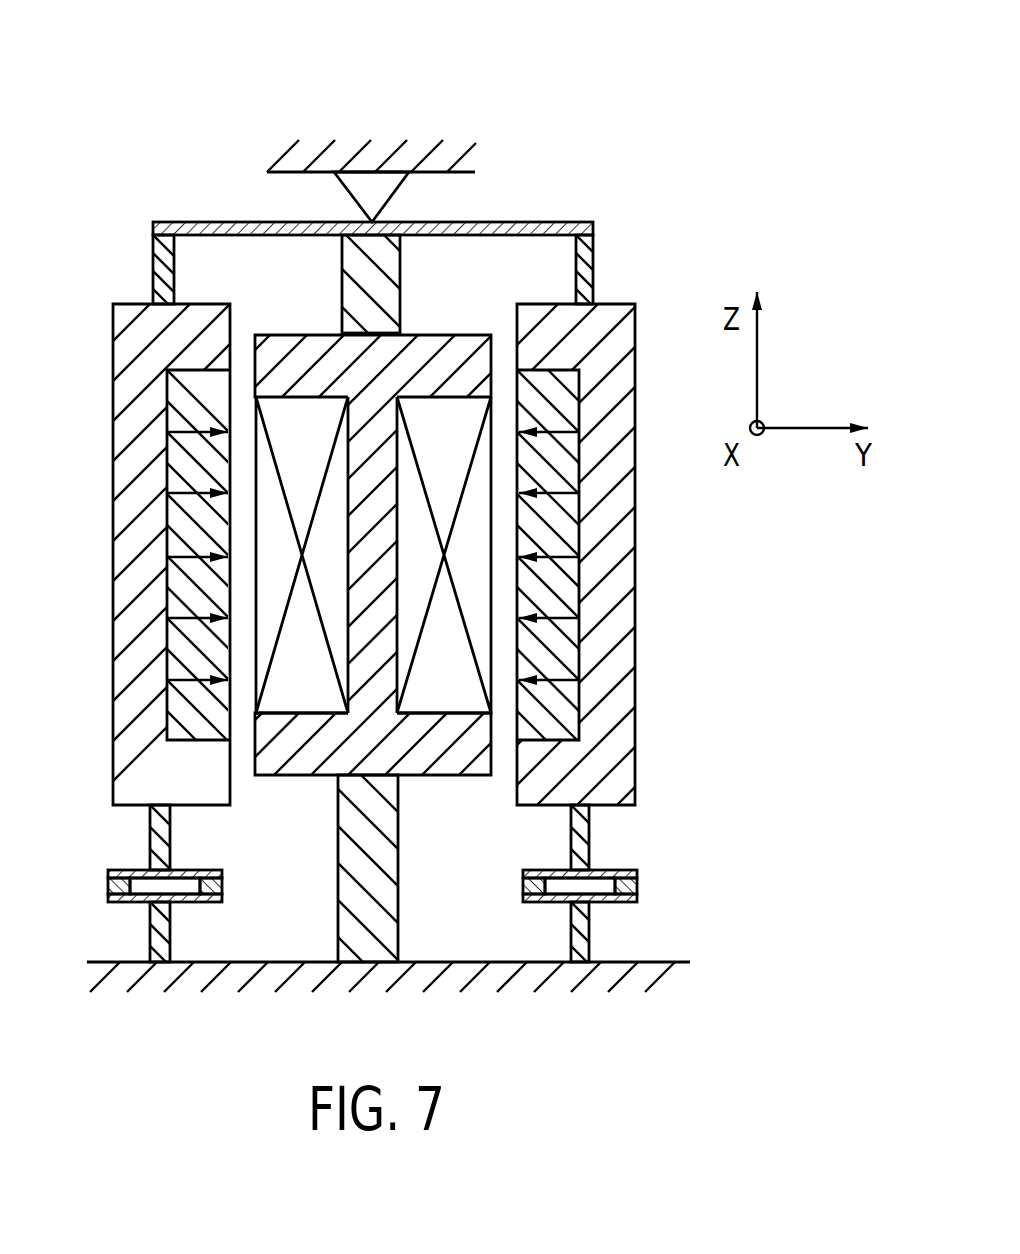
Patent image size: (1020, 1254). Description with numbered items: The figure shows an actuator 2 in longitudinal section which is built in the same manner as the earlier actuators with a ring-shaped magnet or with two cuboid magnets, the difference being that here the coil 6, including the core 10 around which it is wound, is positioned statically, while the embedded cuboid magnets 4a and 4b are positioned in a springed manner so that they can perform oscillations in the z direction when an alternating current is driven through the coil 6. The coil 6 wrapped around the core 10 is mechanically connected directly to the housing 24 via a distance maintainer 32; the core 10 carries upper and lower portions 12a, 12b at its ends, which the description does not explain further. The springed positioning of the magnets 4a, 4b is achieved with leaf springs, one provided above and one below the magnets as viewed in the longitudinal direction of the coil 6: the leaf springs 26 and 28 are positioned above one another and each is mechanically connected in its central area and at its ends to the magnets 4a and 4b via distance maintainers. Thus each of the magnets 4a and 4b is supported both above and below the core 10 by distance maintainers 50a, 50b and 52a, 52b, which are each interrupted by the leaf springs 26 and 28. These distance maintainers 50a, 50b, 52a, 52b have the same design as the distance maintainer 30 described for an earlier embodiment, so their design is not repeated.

The actuator 2 is at (682, 96).
The housing 24 is at (455, 150).
The leaf spring 26 is at (585, 222).
The leaf spring 28 is at (114, 902).
The distance maintainer 30 is at (376, 311).
The distance maintainer 32 is at (378, 891).
The upper yoke portion 12a is at (473, 345).
The lower yoke portion 12b is at (450, 762).
The core 10 is at (372, 622).
The coil 6 is at (300, 598).
The cuboid magnet 4a is at (175, 652).
The cuboid magnet 4b is at (565, 640).
The distance maintainer 50a is at (170, 852).
The distance maintainer 50b is at (163, 940).
The distance maintainer 52a is at (571, 845).
The distance maintainer 52b is at (571, 932).